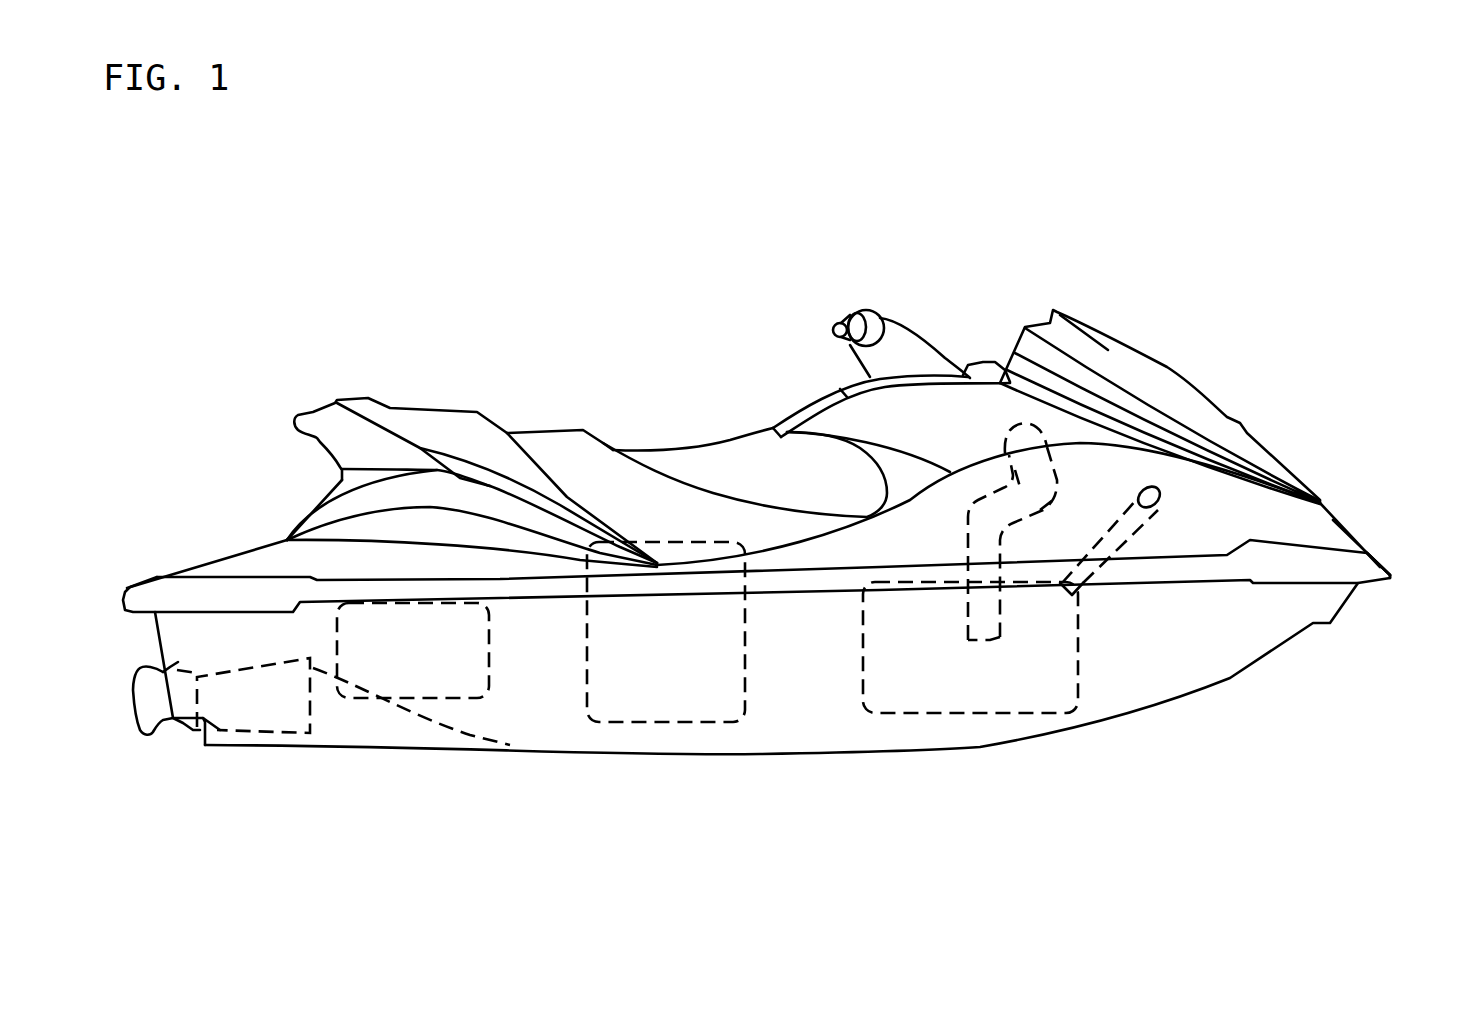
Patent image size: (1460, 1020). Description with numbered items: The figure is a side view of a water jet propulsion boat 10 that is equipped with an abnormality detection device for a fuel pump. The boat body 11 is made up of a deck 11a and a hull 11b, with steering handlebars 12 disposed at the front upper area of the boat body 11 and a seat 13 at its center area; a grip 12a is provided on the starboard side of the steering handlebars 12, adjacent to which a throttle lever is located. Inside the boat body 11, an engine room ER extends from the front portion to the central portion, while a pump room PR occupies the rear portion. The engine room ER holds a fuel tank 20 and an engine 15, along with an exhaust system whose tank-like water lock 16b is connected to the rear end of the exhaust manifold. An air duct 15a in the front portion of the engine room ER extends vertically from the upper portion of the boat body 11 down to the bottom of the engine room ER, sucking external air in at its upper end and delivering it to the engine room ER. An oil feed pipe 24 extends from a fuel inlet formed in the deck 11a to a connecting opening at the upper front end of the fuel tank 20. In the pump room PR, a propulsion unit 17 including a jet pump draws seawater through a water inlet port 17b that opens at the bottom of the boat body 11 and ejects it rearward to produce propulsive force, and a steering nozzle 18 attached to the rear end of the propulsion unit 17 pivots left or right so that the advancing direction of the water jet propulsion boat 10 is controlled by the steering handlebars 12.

The water jet propulsion boat 10 is at (433, 280).
The boat body 11 is at (1417, 528).
The deck 11a is at (1363, 537).
The hull 11b is at (1350, 593).
The steering handlebars 12 is at (871, 311).
The grip 12a is at (833, 330).
The seat 13 is at (713, 442).
The engine 15 is at (688, 728).
The air duct 15a is at (1002, 537).
The water lock 16b is at (490, 635).
The propulsion unit 17 is at (248, 743).
The water inlet port 17b is at (435, 727).
The steering nozzle 18 is at (192, 730).
The fuel tank 20 is at (1078, 658).
The oil feed pipe 24 is at (1130, 539).
The pump room PR is at (272, 617).
The engine room ER is at (810, 720).